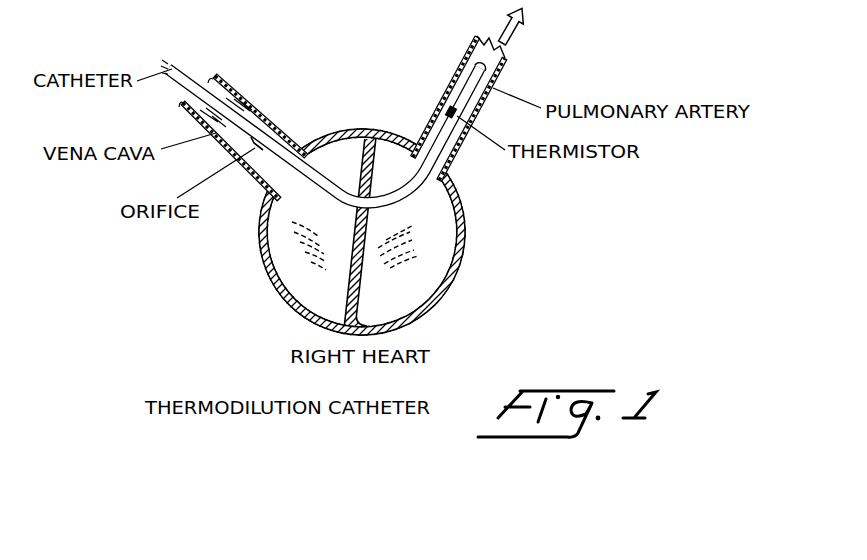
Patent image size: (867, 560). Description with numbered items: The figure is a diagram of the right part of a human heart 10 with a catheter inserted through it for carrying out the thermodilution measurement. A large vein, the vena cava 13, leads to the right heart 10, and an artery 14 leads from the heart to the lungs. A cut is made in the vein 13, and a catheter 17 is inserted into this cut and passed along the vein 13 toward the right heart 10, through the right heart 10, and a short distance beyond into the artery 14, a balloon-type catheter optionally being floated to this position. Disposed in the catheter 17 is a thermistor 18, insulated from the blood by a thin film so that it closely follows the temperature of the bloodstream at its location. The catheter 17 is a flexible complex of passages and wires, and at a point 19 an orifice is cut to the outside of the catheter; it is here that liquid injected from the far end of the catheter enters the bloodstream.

The right heart 10 is at (467, 218).
The vena cava 13 is at (240, 97).
The artery 14 is at (506, 66).
The catheter 17 is at (190, 77).
The thermistor 18 is at (446, 105).
The orifice point 19 is at (270, 135).